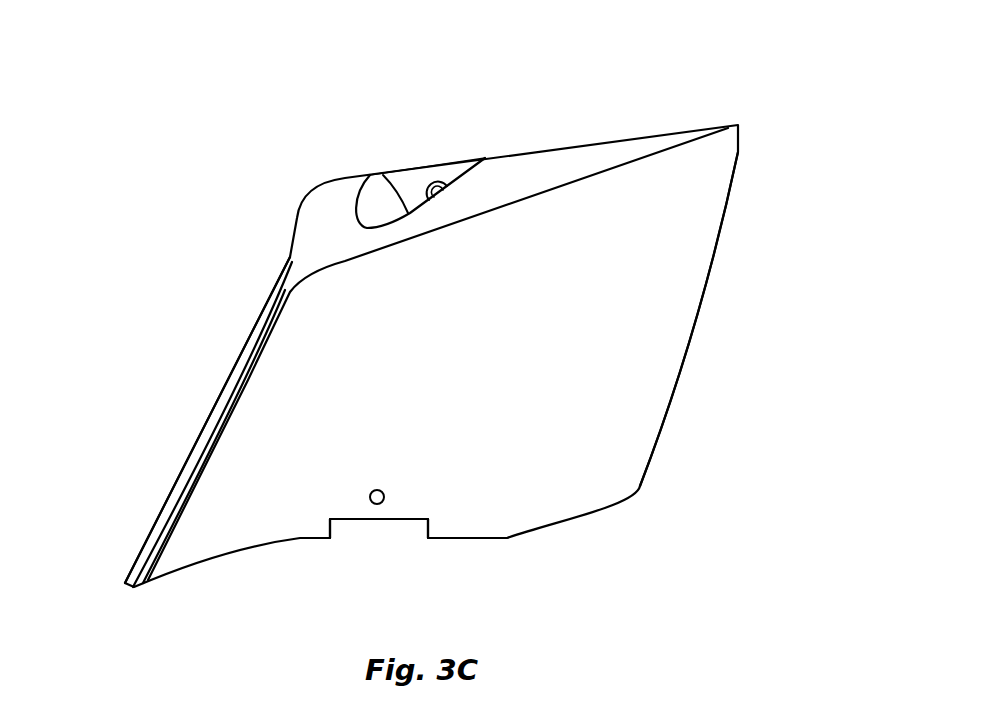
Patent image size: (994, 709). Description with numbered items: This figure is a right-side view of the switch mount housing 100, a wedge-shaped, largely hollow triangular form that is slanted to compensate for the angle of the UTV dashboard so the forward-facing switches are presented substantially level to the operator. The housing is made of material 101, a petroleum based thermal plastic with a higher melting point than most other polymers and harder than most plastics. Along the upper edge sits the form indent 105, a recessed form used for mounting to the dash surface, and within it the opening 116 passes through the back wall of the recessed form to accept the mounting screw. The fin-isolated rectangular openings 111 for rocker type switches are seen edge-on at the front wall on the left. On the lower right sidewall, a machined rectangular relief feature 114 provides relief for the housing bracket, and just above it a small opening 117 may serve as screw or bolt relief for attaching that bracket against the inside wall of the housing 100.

The switch mount housing 100 is at (617, 88).
The material 101 is at (661, 336).
The form indent 105 is at (379, 206).
The rectangular openings 111 is at (190, 416).
The rectangular relief feature 114 is at (379, 521).
The opening 116 is at (433, 182).
The small opening 117 is at (385, 497).